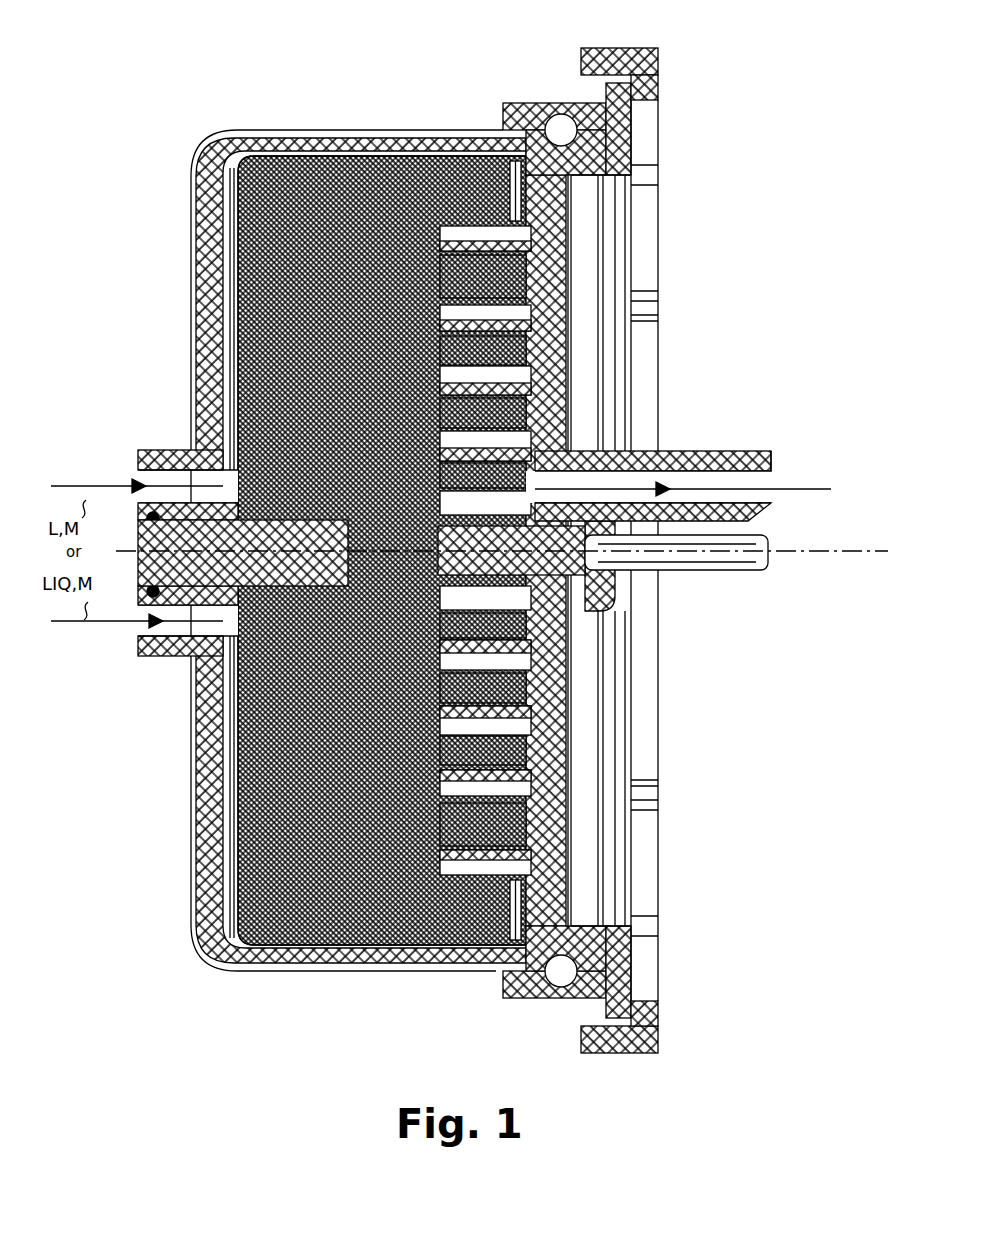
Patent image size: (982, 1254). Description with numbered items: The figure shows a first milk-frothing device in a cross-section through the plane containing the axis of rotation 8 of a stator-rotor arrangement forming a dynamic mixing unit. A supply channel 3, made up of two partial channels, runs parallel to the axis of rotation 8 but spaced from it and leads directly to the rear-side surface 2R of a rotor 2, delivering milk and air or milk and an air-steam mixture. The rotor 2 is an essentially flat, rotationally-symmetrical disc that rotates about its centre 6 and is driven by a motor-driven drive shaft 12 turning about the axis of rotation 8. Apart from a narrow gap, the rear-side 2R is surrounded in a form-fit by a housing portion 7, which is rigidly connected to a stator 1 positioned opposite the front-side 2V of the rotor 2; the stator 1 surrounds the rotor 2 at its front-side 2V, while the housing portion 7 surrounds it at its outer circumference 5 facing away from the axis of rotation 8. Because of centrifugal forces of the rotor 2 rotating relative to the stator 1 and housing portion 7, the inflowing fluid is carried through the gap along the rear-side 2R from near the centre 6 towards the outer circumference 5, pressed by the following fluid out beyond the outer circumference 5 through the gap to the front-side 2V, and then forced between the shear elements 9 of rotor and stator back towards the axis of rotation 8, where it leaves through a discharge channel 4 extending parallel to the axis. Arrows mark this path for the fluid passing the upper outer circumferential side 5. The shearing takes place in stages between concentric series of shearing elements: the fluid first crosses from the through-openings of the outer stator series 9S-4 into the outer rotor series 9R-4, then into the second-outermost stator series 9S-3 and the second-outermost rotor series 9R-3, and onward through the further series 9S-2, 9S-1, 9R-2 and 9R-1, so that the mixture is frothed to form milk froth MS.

The stator 1 is at (600, 128).
The rotor 2 is at (433, 126).
The rear-side surface 2R is at (248, 430).
The front-side 2V is at (457, 282).
The supply channel 3 is at (167, 460).
The discharge channel 4 is at (727, 443).
The outer circumference 5 is at (378, 156).
The centre 6 is at (469, 550).
The housing portion 7 is at (347, 130).
The axis of rotation 8 is at (803, 541).
The shear elements 9 is at (262, 540).
The drive shaft 12 is at (228, 582).
The milk froth MS is at (793, 478).
The series of shearing elements of the stator 9S-1 is at (485, 550).
The series of shearing elements of the stator 9S-2 is at (485, 550).
The second-outermost series of shearing elements of the stator 9S-3 is at (485, 550).
The outer series of shearing elements of the stator 9S-4 is at (485, 550).
The series of shearing elements of the rotor 9R-1 is at (483, 550).
The series of shearing elements of the rotor 9R-2 is at (483, 550).
The second-outermost series of shearing elements of the rotor 9R-3 is at (483, 550).
The outer series of shearing elements of the rotor 9R-4 is at (483, 550).